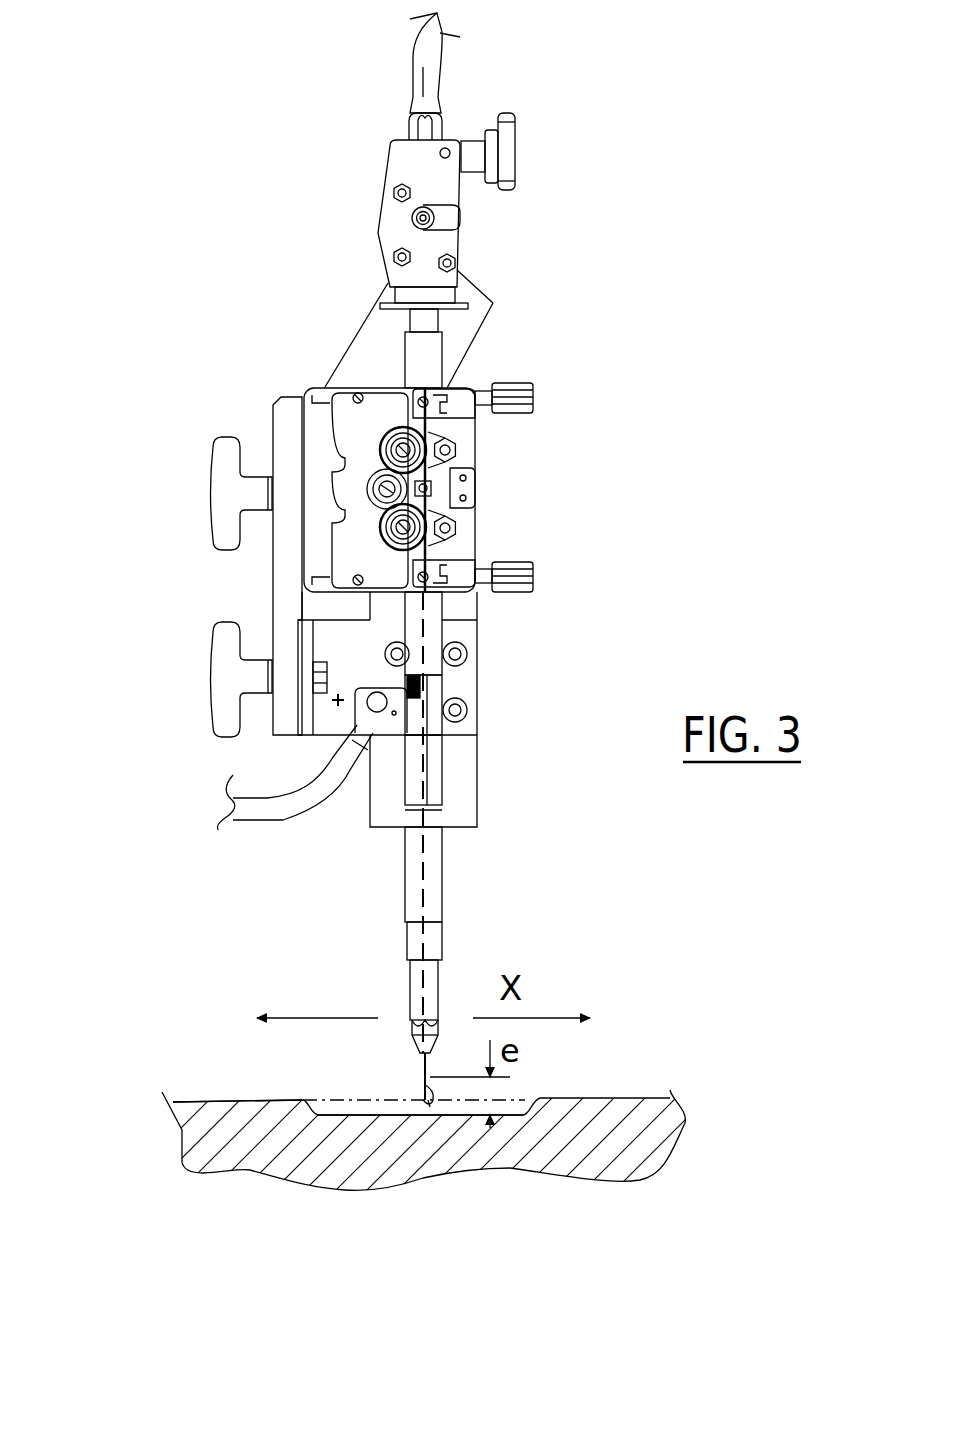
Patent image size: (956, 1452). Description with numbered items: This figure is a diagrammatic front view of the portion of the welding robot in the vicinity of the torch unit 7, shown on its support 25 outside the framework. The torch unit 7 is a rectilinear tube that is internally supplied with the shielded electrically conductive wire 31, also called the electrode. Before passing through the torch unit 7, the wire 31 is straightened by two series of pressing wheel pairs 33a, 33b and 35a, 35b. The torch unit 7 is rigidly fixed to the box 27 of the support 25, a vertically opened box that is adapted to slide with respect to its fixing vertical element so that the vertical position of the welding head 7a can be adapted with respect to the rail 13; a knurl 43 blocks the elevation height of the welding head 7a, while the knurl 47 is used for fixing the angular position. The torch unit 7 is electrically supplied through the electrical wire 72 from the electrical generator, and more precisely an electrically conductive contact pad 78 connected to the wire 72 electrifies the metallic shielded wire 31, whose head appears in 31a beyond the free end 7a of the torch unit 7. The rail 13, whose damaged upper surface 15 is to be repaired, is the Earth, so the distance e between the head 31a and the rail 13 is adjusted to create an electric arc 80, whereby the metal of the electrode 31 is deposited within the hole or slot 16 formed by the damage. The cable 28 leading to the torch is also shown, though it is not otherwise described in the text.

The torch cable 28 is at (437, 65).
The support 25 is at (288, 398).
The pressing wheel 33a is at (382, 445).
The pressing wheel 33b is at (430, 443).
The pressing wheel 35a is at (382, 533).
The pressing wheel 35b is at (427, 533).
The shielded electrically conductive wire 31 is at (443, 502).
The knurl 47 is at (212, 493).
The knurl 43 is at (212, 678).
The box 27 is at (315, 602).
The electrically conductive contact pad 78 is at (420, 687).
The electrical wire 72 is at (230, 805).
The torch unit 7 is at (405, 883).
The welding head 7a is at (420, 1058).
The upper surface of the rail 15 is at (210, 1102).
The rail 13 is at (617, 1158).
The hole 16 is at (343, 1115).
The head of the electrode wire 31a is at (423, 1100).
The electric arc 80 is at (430, 1105).